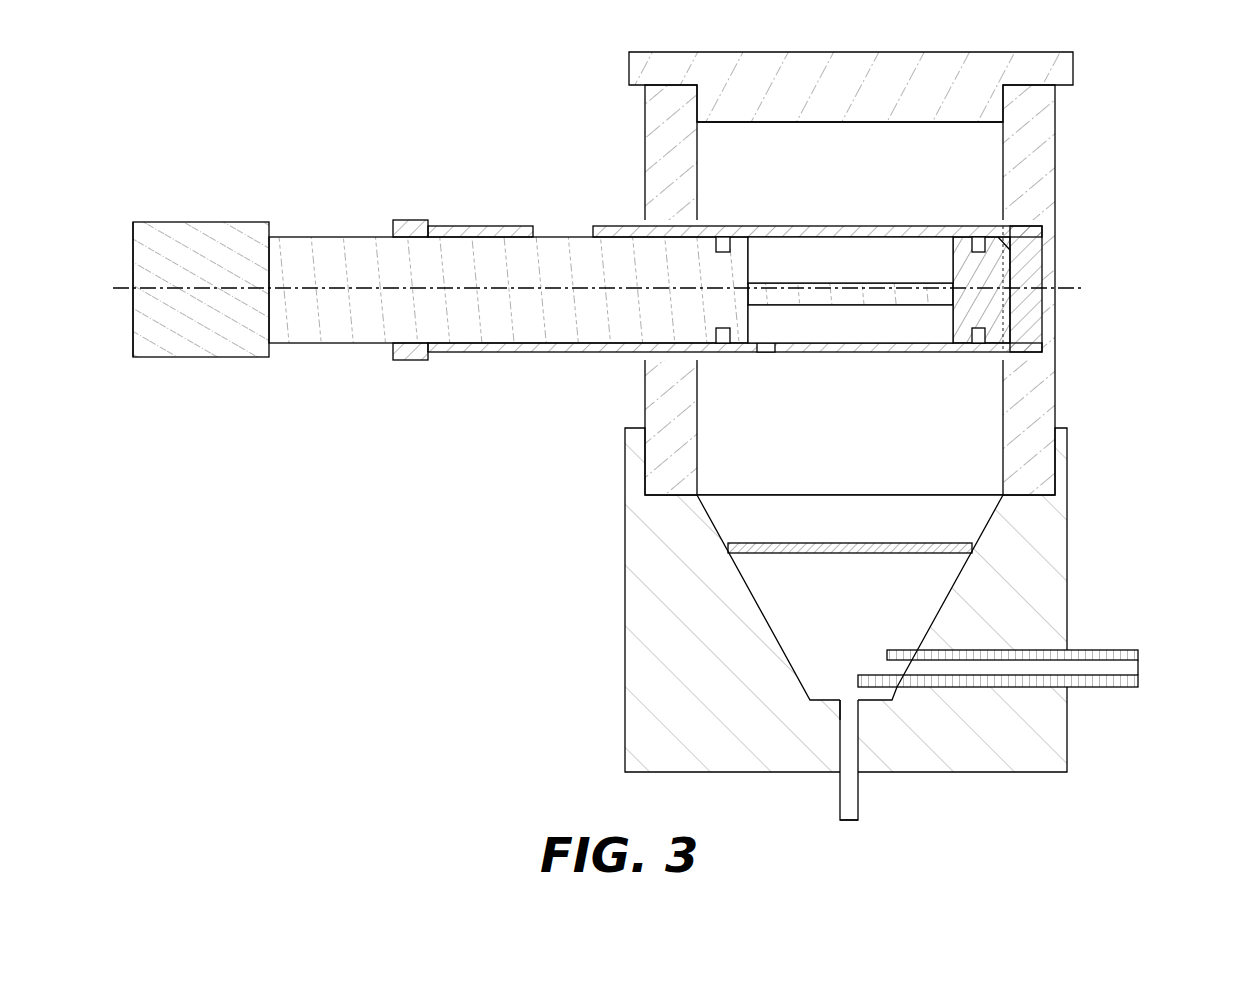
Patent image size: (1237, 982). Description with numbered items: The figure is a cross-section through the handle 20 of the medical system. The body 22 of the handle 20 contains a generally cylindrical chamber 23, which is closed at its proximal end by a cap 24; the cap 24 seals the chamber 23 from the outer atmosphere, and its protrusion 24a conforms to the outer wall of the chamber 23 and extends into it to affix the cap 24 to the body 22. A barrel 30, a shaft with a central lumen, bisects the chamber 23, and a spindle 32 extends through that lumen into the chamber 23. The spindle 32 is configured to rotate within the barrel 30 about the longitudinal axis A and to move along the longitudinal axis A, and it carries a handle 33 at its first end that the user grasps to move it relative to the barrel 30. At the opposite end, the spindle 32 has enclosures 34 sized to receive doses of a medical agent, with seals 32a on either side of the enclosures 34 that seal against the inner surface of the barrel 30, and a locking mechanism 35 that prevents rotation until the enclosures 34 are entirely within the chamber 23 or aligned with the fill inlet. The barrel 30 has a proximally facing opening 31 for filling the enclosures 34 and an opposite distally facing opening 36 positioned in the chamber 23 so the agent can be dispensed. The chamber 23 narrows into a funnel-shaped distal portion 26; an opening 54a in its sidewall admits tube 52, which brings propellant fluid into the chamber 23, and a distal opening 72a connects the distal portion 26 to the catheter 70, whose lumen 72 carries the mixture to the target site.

The handle 20 is at (1168, 101).
The body 22 is at (1078, 168).
The chamber 23 is at (985, 170).
The cap 24 is at (636, 66).
The protrusion 24a is at (716, 97).
The distal portion 26 is at (792, 582).
The barrel 30 is at (413, 228).
The proximally facing opening 31 is at (565, 232).
The spindle 32 is at (230, 232).
The seal 32a is at (978, 240).
The handle 33 is at (133, 310).
The enclosure 34 is at (948, 263).
The locking mechanism 35 is at (948, 322).
The distally facing opening 36 is at (902, 348).
The tube 52 is at (1122, 650).
The opening 54a is at (870, 690).
The catheter 70 is at (858, 790).
The lumen 72 is at (850, 812).
The distal opening 72a is at (856, 682).
The longitudinal axis A is at (188, 286).